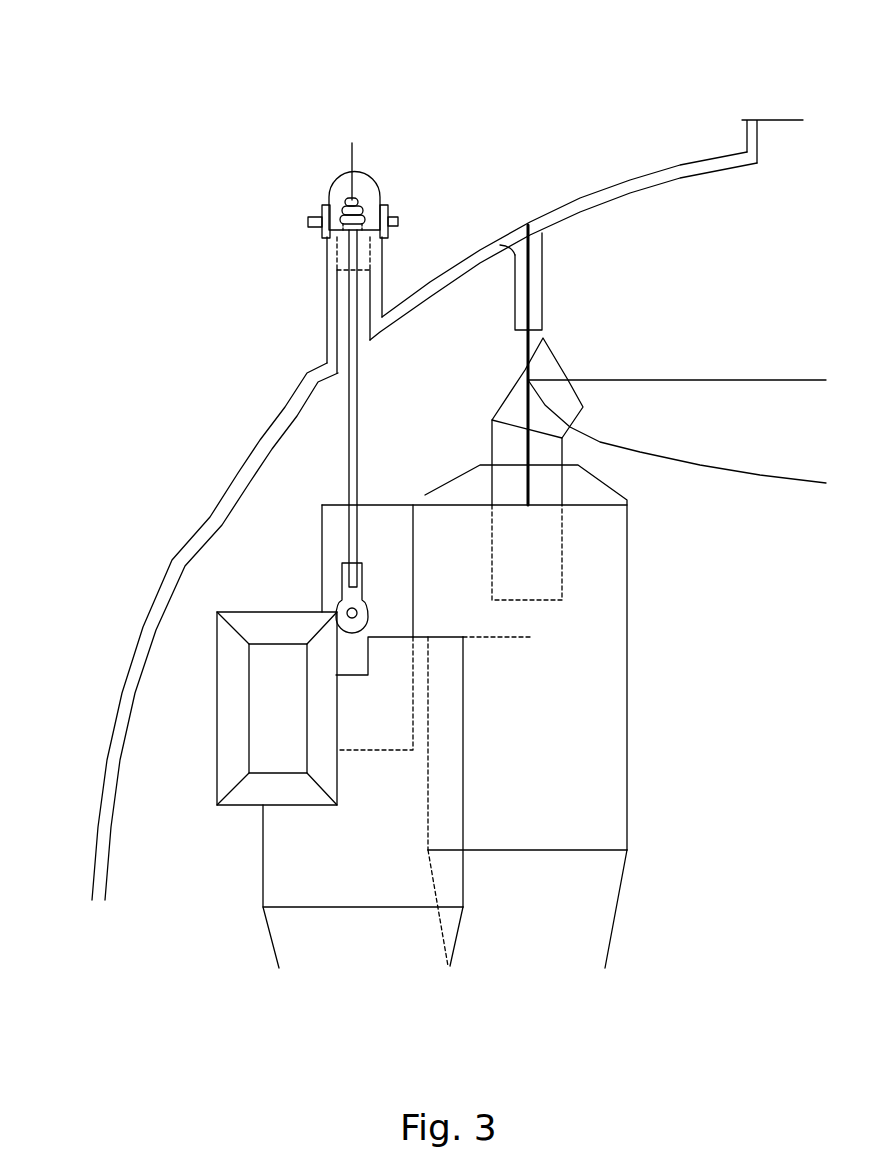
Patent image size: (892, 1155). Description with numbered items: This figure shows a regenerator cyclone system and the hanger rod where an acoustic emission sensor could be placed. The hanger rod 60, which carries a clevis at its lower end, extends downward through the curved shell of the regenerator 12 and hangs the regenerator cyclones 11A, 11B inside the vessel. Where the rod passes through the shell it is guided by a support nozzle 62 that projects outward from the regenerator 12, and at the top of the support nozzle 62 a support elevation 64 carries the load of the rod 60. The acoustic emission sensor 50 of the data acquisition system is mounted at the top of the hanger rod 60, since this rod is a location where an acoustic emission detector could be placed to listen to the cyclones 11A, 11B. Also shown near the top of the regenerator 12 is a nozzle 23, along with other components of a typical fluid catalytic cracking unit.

The regenerator 12 is at (218, 520).
The nozzle 23 is at (778, 120).
The acoustic emission sensor 50 is at (358, 255).
The hanger rod 60 is at (349, 404).
The support nozzle 62 is at (327, 303).
The support elevation 64 is at (308, 222).
The regenerator cyclone 11A is at (263, 890).
The regenerator cyclone 11B is at (627, 810).